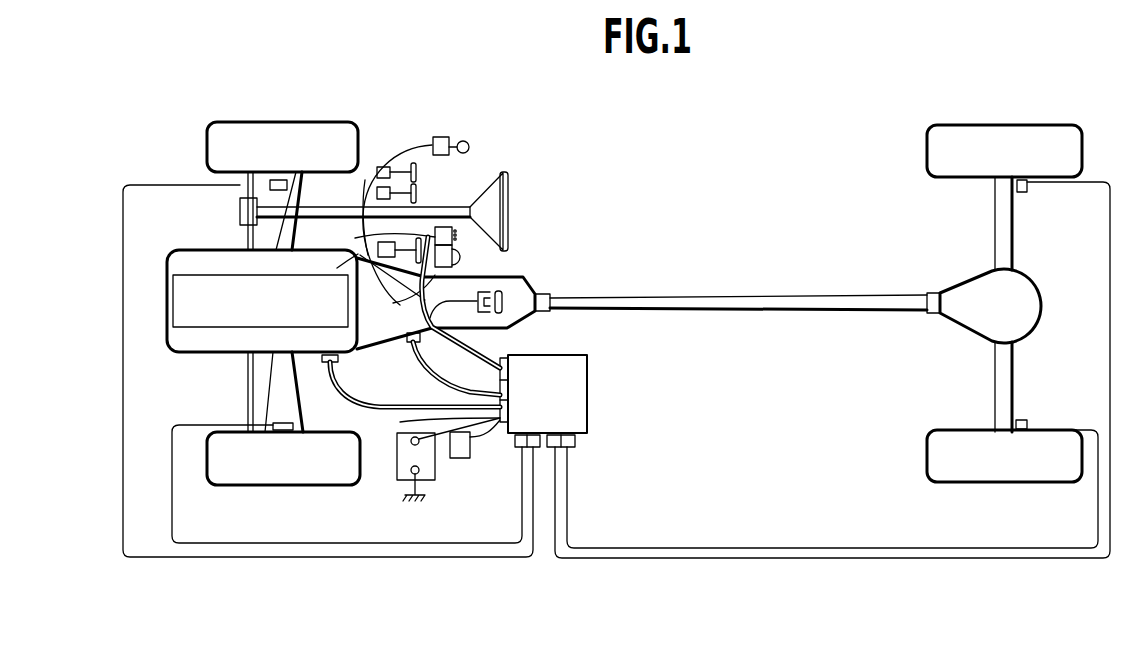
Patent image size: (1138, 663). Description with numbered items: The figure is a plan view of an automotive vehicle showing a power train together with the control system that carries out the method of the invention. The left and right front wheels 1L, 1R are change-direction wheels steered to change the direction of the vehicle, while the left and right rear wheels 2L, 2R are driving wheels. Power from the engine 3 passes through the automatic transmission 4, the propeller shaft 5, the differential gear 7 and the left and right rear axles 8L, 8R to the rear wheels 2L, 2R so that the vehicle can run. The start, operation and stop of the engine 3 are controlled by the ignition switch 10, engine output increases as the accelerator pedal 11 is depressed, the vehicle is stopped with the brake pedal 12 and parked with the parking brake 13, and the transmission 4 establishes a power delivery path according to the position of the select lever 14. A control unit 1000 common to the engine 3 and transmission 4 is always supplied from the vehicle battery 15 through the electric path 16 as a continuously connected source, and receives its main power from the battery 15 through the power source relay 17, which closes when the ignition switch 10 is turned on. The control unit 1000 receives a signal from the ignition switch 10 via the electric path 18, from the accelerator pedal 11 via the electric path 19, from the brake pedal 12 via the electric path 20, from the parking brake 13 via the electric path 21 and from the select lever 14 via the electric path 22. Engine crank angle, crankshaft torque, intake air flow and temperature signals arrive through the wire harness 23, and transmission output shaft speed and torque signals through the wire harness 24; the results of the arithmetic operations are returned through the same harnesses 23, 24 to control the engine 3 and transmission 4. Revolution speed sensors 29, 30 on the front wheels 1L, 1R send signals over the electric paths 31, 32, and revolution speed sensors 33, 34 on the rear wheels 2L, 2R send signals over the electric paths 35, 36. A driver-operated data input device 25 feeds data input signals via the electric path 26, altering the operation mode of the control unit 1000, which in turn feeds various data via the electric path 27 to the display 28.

The right front wheel 1R is at (236, 122).
The left front wheel 1L is at (230, 487).
The right rear wheel 2R is at (1050, 125).
The left rear wheel 2L is at (1050, 482).
The engine 3 is at (197, 355).
The transmission 4 is at (375, 345).
The propeller shaft 5 is at (800, 296).
The differential gear 7 is at (1043, 312).
The right rear axle 8R is at (1012, 240).
The left rear axle 8L is at (1012, 388).
The ignition switch 10 is at (450, 137).
The accelerator pedal 11 is at (418, 173).
The brake pedal 12 is at (418, 193).
The parking brake 13 is at (378, 246).
The select lever 14 is at (537, 296).
The vehicle battery 15 is at (397, 462).
The electric path 16 is at (400, 422).
The power source relay 17 is at (462, 460).
The electric path 18 is at (412, 146).
The electric path 19 is at (365, 180).
The electric path 20 is at (362, 195).
The electric path 21 is at (355, 255).
The electric path 22 is at (510, 312).
The wire harness 23 is at (350, 395).
The wire harness 24 is at (435, 383).
The data input device 25 is at (456, 235).
The electric path 26 is at (410, 293).
The electric path 27 is at (450, 310).
The display 28 is at (454, 258).
The revolution speed sensor 29 is at (280, 422).
The revolution speed sensor 30 is at (270, 186).
The electric path 31 is at (172, 499).
The electric path 32 is at (300, 558).
The revolution speed sensor 33 is at (1027, 418).
The revolution speed sensor 34 is at (1022, 194).
The electric path 35 is at (805, 548).
The electric path 36 is at (803, 558).
The control unit 1000 is at (587, 400).